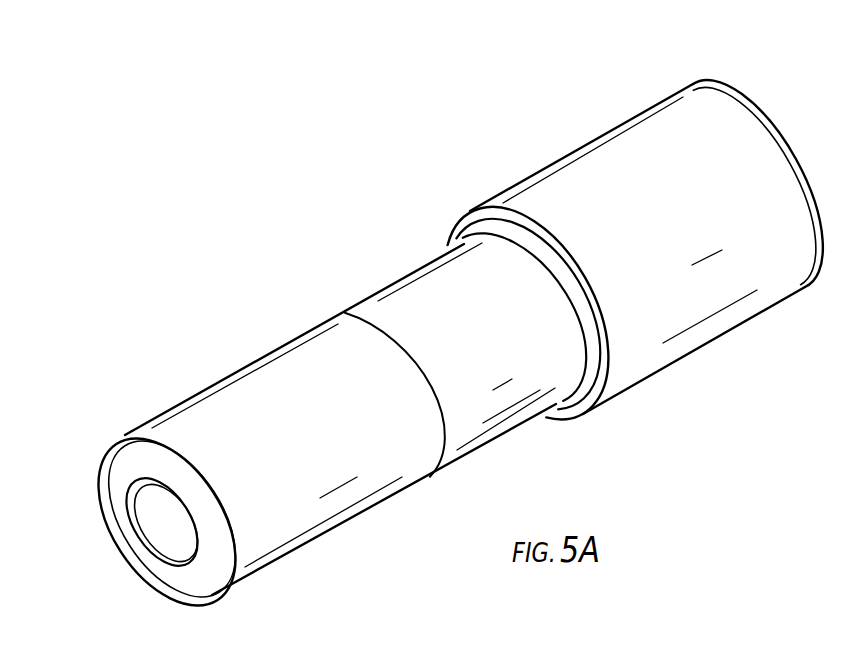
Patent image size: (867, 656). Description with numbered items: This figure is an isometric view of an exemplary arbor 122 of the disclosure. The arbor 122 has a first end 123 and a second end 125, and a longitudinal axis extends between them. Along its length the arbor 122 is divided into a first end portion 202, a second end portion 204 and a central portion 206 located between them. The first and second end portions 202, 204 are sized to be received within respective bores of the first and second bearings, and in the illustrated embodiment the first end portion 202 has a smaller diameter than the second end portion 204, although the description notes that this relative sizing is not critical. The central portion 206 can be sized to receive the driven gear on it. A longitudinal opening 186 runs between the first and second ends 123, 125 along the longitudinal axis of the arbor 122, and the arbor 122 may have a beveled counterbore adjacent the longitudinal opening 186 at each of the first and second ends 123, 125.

The arbor 122 is at (321, 243).
The first end 123 is at (102, 428).
The second end 125 is at (707, 74).
The longitudinal opening 186 is at (173, 527).
The first end portion 202 is at (322, 535).
The second end portion 204 is at (721, 336).
The central portion 206 is at (437, 260).